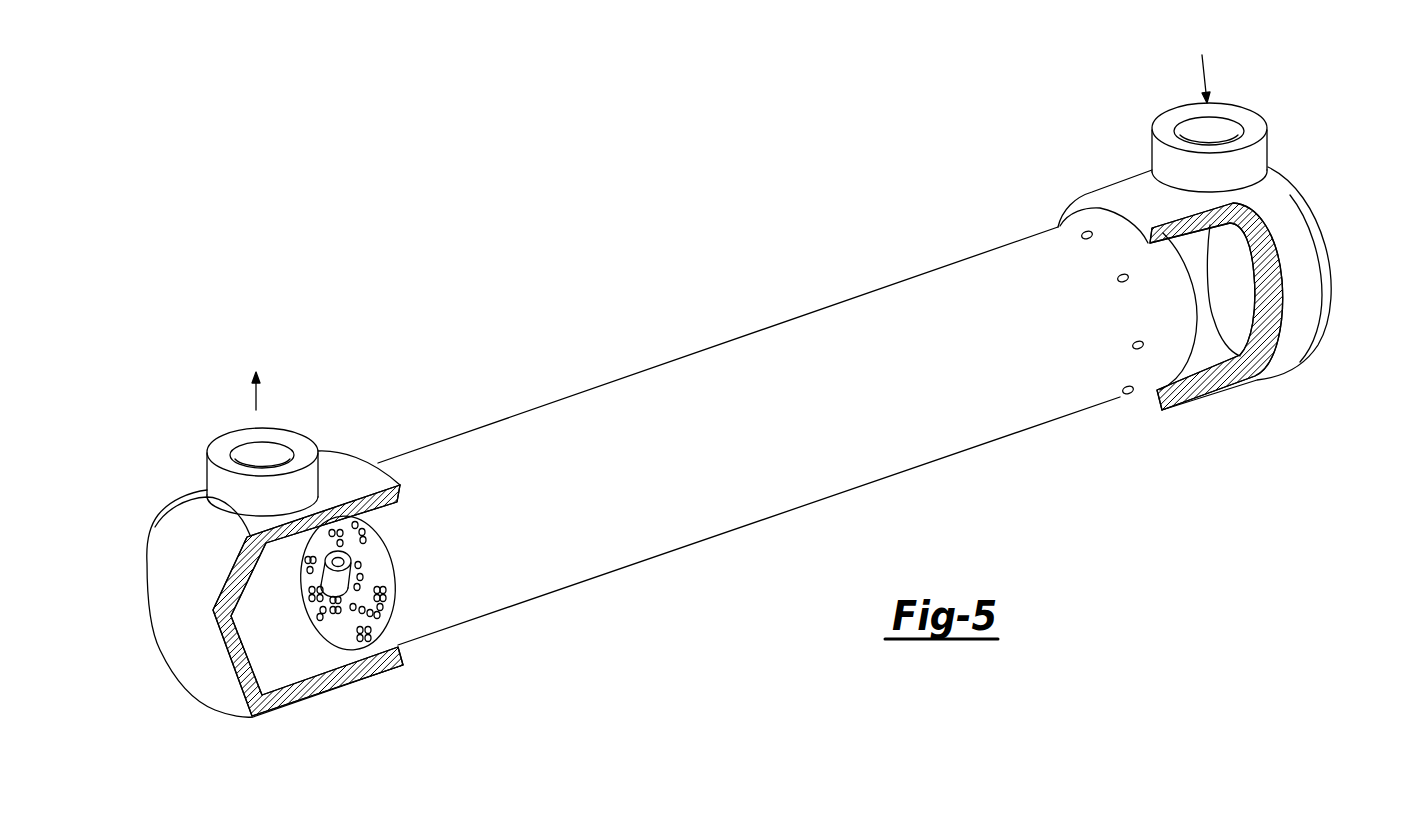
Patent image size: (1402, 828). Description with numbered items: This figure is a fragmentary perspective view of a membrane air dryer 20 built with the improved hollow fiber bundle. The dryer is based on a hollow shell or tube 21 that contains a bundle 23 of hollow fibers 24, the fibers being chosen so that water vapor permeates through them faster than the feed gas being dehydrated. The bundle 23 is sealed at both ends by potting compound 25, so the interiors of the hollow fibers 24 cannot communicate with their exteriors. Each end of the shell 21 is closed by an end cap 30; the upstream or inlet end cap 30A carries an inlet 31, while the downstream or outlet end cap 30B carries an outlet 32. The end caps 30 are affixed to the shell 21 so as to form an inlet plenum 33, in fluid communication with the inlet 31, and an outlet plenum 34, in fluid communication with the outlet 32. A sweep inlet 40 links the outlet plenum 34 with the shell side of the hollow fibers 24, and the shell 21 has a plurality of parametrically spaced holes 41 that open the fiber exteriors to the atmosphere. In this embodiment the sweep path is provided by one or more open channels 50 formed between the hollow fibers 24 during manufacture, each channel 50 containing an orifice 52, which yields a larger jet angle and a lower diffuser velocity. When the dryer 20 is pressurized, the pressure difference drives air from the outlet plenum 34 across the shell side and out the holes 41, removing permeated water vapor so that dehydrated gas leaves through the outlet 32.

The membrane air dryer 20 is at (568, 349).
The hollow shell or tube 21 is at (523, 426).
The bundle of hollow fibers 23 is at (315, 646).
The hollow fibers 24 is at (363, 605).
The potting compound 25 is at (372, 557).
The end cap 30 is at (150, 520).
The inlet end cap 30A is at (1320, 227).
The outlet end cap 30B is at (155, 624).
The inlet 31 is at (1219, 122).
The outlet 32 is at (261, 443).
The inlet plenum 33 is at (1212, 351).
The outlet plenum 34 is at (263, 662).
The sweep inlet 40 is at (270, 640).
The holes in the shell (sweep outlet) 41 is at (1087, 237).
The open channel 50 is at (318, 567).
The orifice 52 is at (340, 578).